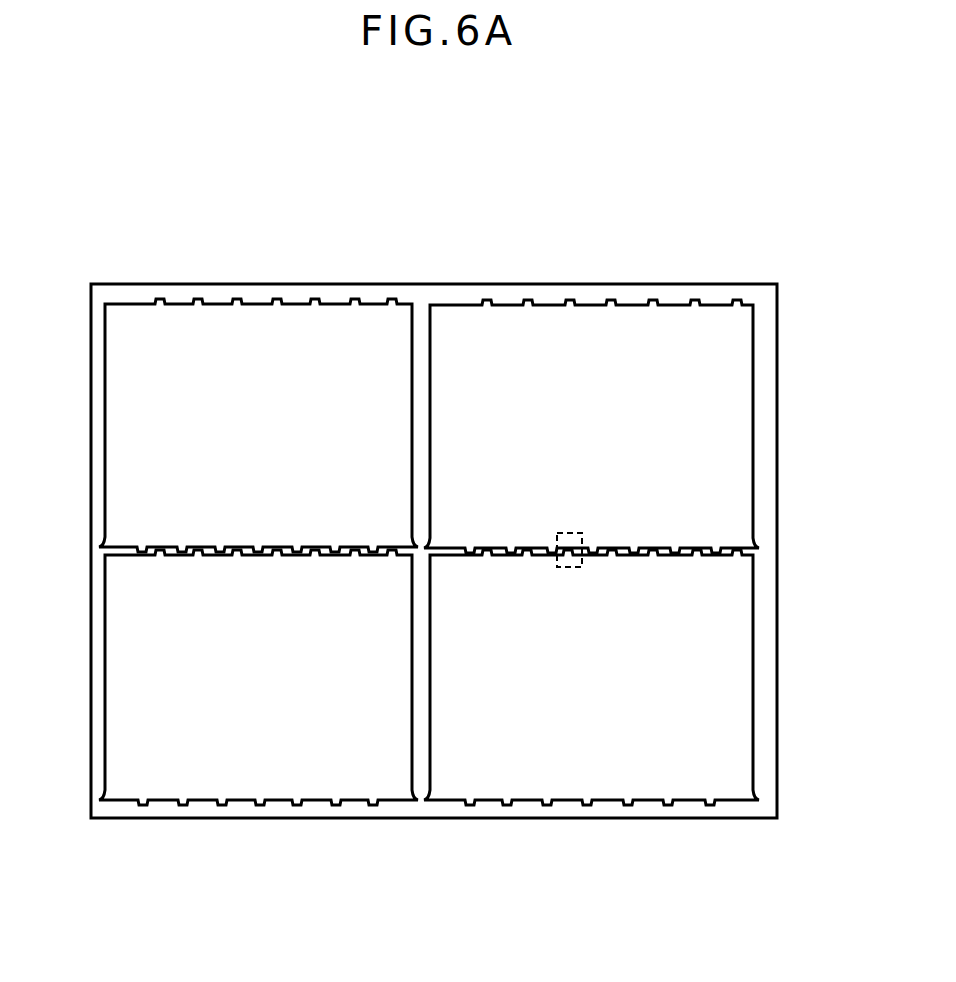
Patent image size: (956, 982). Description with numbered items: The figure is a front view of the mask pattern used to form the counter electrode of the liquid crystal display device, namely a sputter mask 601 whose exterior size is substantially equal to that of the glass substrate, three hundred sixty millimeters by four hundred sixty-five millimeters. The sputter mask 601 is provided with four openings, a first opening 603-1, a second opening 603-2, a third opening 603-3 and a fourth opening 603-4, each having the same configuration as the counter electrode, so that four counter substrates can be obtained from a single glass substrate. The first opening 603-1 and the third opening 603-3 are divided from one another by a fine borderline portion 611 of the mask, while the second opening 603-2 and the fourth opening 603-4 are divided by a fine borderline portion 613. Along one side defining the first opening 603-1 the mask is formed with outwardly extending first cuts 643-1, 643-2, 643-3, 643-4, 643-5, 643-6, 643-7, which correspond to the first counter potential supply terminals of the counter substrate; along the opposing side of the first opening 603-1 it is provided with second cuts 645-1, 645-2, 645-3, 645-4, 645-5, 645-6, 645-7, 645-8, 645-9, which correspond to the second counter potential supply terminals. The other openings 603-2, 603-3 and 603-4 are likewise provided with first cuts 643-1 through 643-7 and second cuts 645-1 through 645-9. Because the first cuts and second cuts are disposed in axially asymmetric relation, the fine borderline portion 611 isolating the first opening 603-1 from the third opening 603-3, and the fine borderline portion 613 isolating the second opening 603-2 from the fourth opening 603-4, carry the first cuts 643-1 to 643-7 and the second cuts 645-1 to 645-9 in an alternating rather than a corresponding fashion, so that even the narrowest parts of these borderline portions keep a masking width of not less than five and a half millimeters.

The sputter mask 601 is at (858, 238).
The first opening 603-1 is at (328, 323).
The second opening 603-2 is at (585, 340).
The third opening 603-3 is at (282, 775).
The fourth opening 603-4 is at (593, 775).
The fine borderline portion 611 is at (112, 558).
The fine borderline portion 613 is at (733, 542).
The first cut 643-1 is at (162, 297).
The first cut 643-2 is at (203, 297).
The first cut 643-3 is at (240, 297).
The first cut 643-4 is at (280, 297).
The first cut 643-5 is at (320, 298).
The first cut 643-6 is at (352, 300).
The first cut 643-7 is at (400, 296).
The second cut 645-1 is at (103, 546).
The second cut 645-2 is at (143, 543).
The second cut 645-3 is at (182, 545).
The second cut 645-4 is at (220, 545).
The second cut 645-5 is at (257, 545).
The second cut 645-6 is at (295, 546).
The second cut 645-7 is at (333, 546).
The second cut 645-8 is at (370, 546).
The second cut 645-9 is at (420, 543).